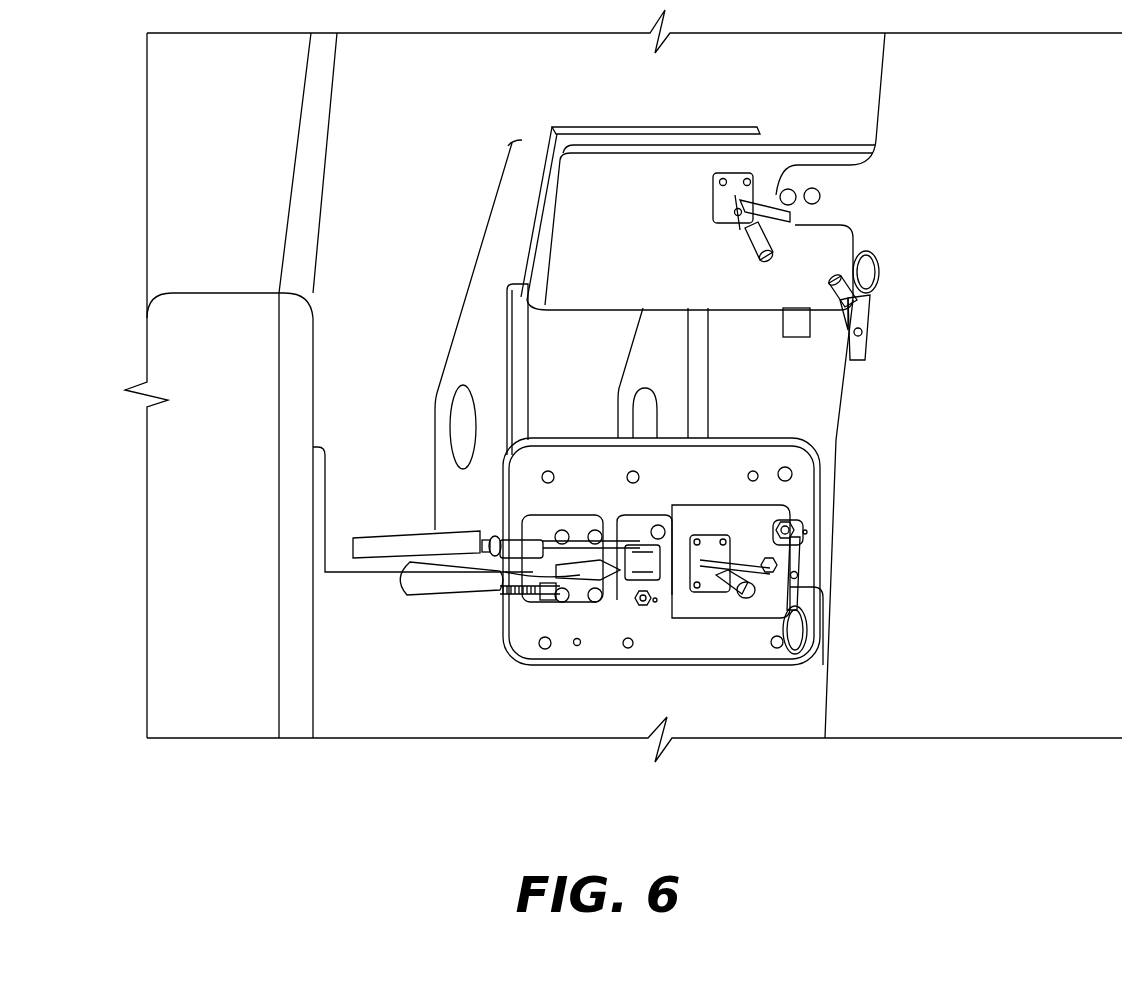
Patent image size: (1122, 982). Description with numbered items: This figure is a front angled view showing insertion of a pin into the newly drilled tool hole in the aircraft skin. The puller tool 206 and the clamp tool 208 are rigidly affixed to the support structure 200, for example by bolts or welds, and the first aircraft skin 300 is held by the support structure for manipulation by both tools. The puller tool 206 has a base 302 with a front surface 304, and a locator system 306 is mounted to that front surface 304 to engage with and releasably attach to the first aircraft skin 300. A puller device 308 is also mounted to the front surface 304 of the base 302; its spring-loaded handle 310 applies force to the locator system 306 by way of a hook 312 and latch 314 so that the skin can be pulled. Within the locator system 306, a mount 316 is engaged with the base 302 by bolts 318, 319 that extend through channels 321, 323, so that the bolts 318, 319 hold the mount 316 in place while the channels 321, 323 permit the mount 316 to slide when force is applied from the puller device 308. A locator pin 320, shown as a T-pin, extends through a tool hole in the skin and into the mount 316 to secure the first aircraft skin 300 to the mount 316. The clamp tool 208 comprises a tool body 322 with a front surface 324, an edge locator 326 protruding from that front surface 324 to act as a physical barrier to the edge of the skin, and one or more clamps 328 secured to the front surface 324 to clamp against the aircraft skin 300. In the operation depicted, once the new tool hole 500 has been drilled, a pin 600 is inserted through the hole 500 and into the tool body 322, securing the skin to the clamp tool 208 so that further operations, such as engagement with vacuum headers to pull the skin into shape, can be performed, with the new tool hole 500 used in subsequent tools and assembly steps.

The support structure 200 is at (147, 252).
The puller tool 206 is at (455, 492).
The clamp tool 208 is at (485, 191).
The first aircraft skin 300 is at (1010, 715).
The base 302 is at (543, 668).
The front surface 304 is at (740, 660).
The locator system 306 is at (762, 635).
The puller device 308 is at (470, 605).
The spring-loaded handle 310 is at (418, 590).
The hook 312 is at (638, 553).
The latch 314 is at (576, 646).
The mount 316 is at (723, 500).
The bolt 318 is at (790, 525).
The bolt 319 is at (641, 607).
The locator pin 320 is at (800, 603).
The channel 321 is at (815, 533).
The tool body 322 is at (572, 148).
The channel 323 is at (663, 610).
The front surface 324 is at (672, 180).
The edge locator 326 is at (835, 275).
The clamp 328 is at (755, 195).
The new tool hole 500 is at (822, 200).
The pin 600 is at (872, 322).